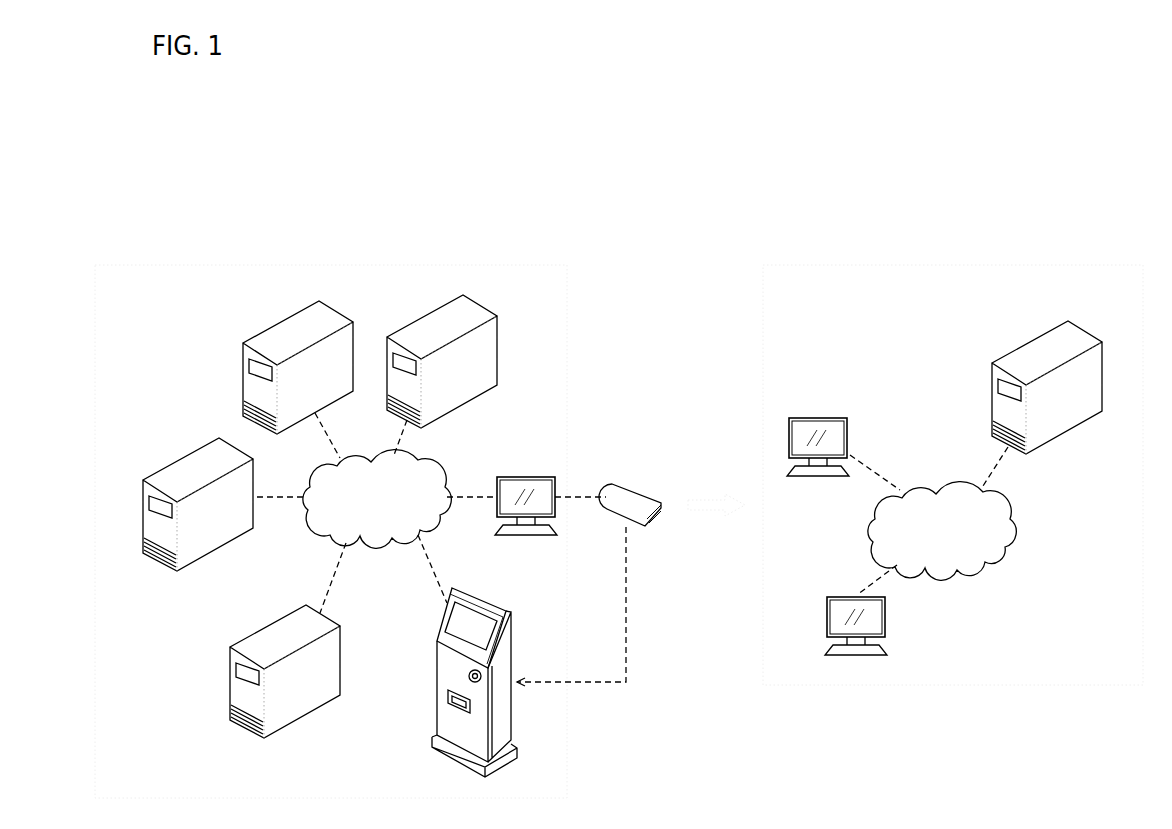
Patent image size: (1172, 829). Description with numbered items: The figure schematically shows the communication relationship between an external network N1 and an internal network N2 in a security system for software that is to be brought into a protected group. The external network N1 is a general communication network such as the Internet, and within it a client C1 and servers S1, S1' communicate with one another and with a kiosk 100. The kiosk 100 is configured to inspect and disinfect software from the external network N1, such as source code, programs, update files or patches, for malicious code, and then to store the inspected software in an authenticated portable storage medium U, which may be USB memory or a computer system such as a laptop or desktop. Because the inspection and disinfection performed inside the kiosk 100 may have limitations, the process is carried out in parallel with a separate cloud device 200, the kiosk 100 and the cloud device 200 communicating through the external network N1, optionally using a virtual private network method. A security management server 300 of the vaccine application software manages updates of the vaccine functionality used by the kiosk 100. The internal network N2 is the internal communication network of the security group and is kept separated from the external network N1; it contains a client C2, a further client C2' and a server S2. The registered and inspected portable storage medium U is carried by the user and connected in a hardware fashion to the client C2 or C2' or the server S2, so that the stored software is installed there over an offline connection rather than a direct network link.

The external network N1 is at (211, 235).
The server S1 is at (298, 319).
The server S1' is at (198, 461).
The security management server 300 is at (450, 295).
The client C1 is at (525, 477).
The portable storage medium U is at (627, 489).
The cloud device 200 is at (230, 680).
The kiosk 100 is at (436, 689).
The internal network N2 is at (987, 217).
The client C2 is at (818, 394).
The server S2 is at (993, 362).
The client C2' is at (911, 626).